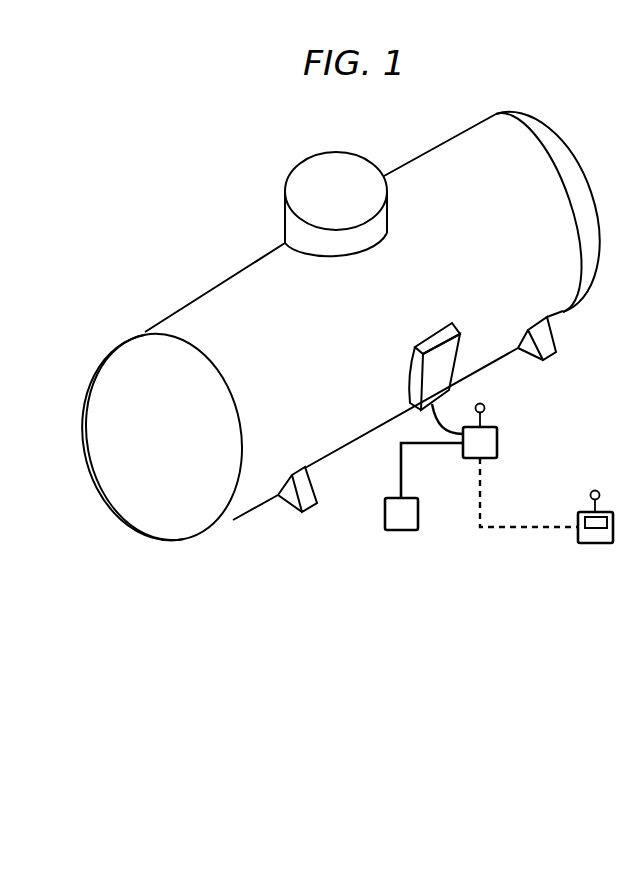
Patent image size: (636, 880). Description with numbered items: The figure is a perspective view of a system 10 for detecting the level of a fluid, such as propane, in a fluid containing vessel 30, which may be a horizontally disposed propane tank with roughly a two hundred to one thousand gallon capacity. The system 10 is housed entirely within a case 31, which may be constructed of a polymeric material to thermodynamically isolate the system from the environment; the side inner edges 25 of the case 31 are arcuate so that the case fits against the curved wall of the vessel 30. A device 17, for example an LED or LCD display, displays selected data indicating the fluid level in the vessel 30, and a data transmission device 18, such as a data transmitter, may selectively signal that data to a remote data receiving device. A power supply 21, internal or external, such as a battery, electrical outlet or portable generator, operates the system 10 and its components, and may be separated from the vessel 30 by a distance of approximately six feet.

The system 10 is at (449, 322).
The side inner edges 25 is at (413, 382).
The case 31 is at (455, 360).
The device 17 is at (499, 448).
The power supply 21 is at (385, 515).
The data transmission device 18 is at (594, 544).
The fluid containing vessel 30 is at (560, 298).